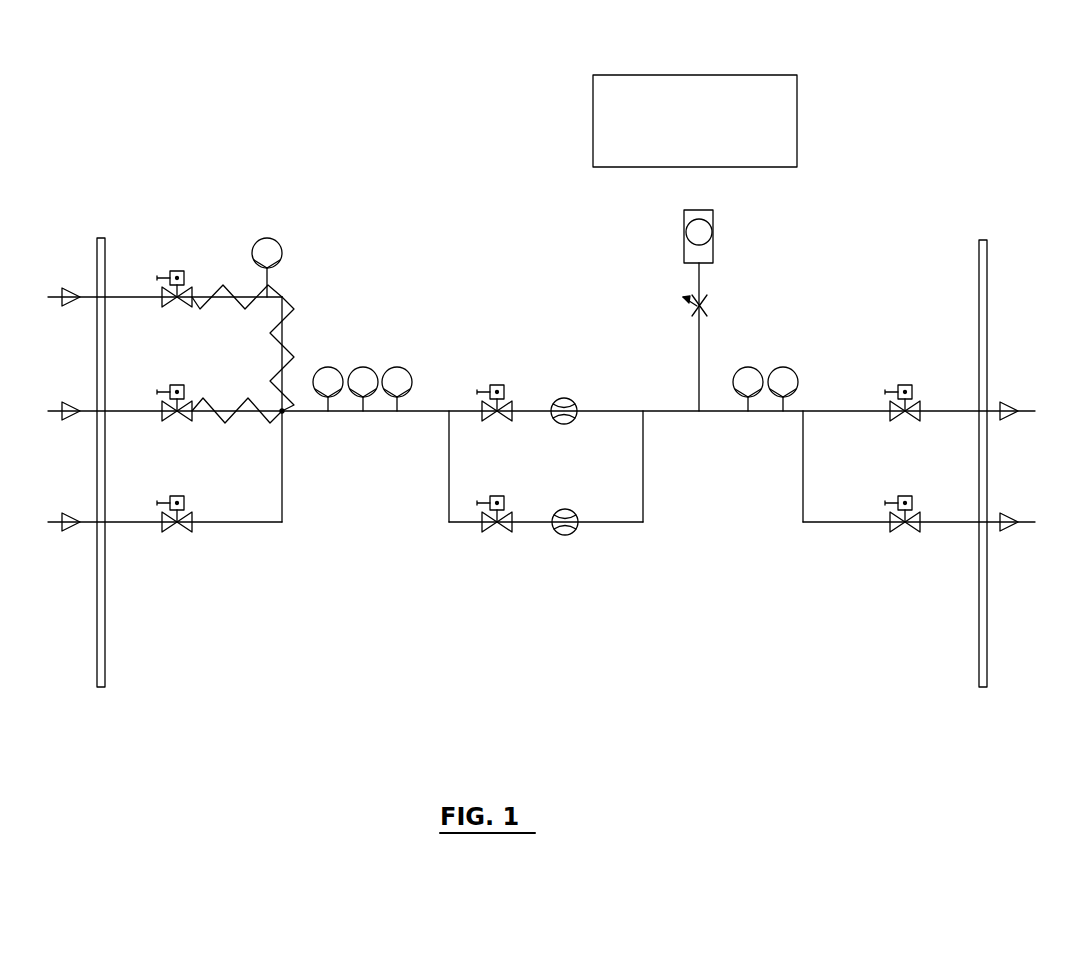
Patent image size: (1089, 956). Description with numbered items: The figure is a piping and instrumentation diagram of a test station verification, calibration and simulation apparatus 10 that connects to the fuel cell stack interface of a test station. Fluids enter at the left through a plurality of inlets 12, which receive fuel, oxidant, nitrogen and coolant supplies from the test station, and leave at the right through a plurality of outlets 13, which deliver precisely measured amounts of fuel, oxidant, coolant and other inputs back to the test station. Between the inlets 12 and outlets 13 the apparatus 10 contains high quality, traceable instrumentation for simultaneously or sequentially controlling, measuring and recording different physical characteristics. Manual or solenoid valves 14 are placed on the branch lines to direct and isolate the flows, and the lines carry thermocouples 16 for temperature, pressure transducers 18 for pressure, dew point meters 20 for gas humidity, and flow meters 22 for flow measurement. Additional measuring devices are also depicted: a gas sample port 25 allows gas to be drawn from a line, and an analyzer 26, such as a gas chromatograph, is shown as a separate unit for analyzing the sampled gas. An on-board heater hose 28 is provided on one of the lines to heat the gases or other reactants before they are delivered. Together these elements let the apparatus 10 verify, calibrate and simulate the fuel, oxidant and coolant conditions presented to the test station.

The test station verification, calibration and simulation apparatus 10 is at (463, 165).
The inlets 12 is at (105, 297).
The outlets 13 is at (987, 410).
The manual or solenoid valves 14 is at (179, 270).
The thermocouples 16 is at (270, 240).
The pressure transducers 18 is at (398, 367).
The dew point meters 20 is at (329, 367).
The flow meters 22 is at (566, 398).
The gas sample ports 25 is at (708, 232).
The analyzers 26 is at (797, 120).
The heater hose 28 is at (283, 413).